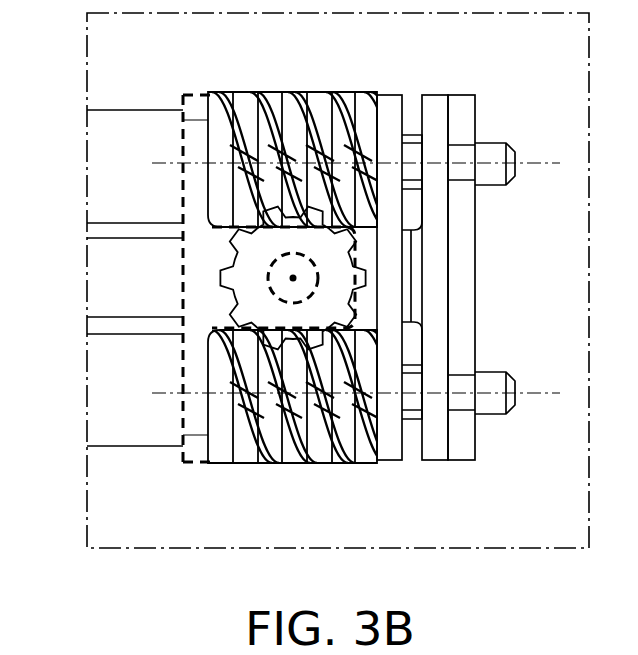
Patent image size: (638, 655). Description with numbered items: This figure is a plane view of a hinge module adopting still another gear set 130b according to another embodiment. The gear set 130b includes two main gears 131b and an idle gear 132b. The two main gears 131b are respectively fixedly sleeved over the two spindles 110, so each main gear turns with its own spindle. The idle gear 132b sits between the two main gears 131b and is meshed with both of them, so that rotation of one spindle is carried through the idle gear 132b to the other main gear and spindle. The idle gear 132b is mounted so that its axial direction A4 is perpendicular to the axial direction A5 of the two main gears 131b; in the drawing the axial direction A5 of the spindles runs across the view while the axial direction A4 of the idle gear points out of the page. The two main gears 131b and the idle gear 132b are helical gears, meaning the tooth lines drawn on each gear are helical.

The gear set 130b is at (218, 283).
The main gear 131b is at (345, 105).
The idle gear 132b is at (245, 298).
The spindle 110 is at (490, 150).
The axial direction of the idle gear A4 is at (293, 278).
The axial direction of the main gears A5 is at (556, 150).